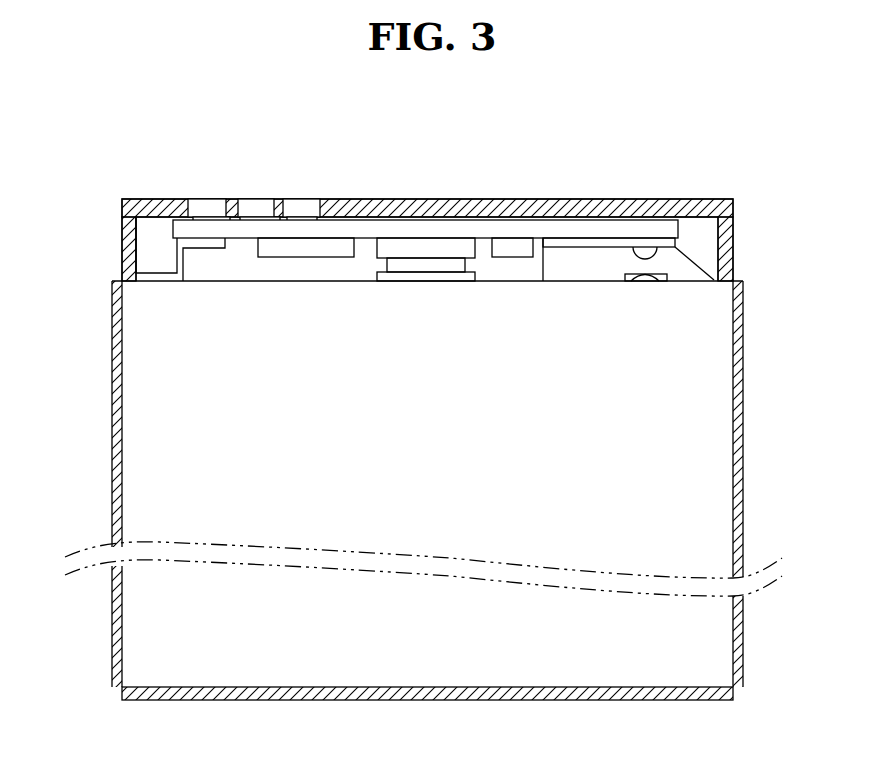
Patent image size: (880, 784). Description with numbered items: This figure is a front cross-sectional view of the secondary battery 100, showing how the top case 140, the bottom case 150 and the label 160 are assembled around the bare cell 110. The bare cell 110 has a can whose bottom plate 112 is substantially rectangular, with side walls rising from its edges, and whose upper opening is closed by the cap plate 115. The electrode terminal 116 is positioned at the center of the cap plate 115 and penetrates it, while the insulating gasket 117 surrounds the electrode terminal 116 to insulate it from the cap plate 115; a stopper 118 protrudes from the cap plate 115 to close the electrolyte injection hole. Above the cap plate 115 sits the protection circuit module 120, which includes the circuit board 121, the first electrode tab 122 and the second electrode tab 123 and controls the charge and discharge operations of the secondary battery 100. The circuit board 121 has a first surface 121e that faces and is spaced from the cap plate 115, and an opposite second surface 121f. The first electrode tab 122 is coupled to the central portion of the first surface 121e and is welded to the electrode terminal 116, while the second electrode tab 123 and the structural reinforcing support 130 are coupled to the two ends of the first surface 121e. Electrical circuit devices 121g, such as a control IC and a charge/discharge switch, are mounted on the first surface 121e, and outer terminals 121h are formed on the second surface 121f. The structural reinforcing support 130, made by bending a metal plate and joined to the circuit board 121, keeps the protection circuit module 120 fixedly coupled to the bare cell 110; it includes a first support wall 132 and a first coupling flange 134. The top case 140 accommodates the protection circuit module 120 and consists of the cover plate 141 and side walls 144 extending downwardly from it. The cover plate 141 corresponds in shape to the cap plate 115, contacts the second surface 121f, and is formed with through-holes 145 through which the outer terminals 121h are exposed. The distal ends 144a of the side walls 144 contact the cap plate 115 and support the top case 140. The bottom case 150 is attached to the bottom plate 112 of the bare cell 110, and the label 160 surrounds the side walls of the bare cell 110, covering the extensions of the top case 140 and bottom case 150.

The secondary battery 100 is at (110, 192).
The bare cell 110 is at (735, 440).
The bottom plate 112 is at (461, 700).
The cap plate 115 is at (363, 281).
The electrode terminal 116 is at (438, 262).
The insulating gasket 117 is at (407, 273).
The stopper 118 is at (647, 282).
The protection circuit module 120 is at (158, 223).
The circuit board 121 is at (505, 232).
The first surface 121e is at (486, 247).
The second surface 121f is at (558, 220).
The electrical circuit devices 121g is at (516, 257).
The outer terminals 121h is at (284, 221).
The first electrode tab 122 is at (402, 245).
The second electrode tab 123 is at (177, 252).
The structural reinforcing support 130 is at (707, 246).
The first support wall 132 is at (599, 275).
The first coupling flange 134 is at (657, 238).
The top case 140 is at (723, 200).
The cover plate 141 is at (455, 207).
The side walls 144 is at (727, 254).
The distal ends 144a is at (130, 281).
The through-holes 145 is at (287, 199).
The bottom case 150 is at (395, 700).
The label 160 is at (742, 368).